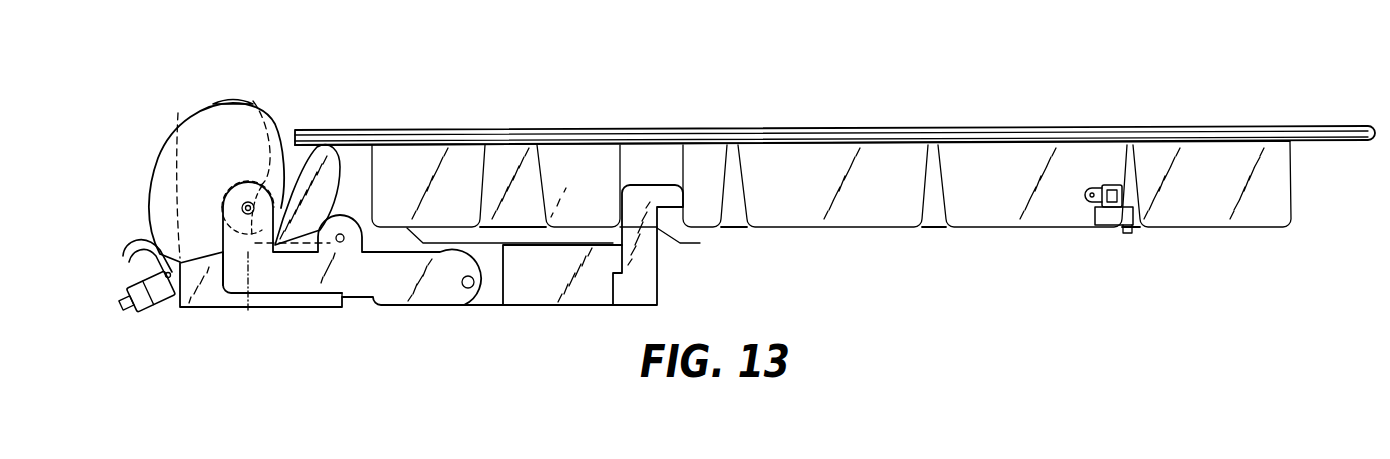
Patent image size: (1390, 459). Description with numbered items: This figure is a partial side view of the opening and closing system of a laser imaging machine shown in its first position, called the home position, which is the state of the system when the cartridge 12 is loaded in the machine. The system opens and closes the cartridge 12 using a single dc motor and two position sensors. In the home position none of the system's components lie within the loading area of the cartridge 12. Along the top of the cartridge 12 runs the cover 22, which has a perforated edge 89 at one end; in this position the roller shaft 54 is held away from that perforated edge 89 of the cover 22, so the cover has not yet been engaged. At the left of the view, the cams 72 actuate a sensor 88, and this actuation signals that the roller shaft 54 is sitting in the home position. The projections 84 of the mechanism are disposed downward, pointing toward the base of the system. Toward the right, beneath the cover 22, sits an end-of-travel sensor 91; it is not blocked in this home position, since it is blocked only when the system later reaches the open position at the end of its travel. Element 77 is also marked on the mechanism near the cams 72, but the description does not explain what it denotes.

The cartridge 12 is at (815, 228).
The cover 22 is at (457, 128).
The roller shaft 54 is at (268, 93).
The cams 72 is at (148, 185).
The dome cap 77 is at (222, 100).
The projections 84 is at (248, 305).
The sensor 88 is at (128, 288).
The perforated edge 89 is at (312, 128).
The end-of-travel sensor 91 is at (1112, 185).